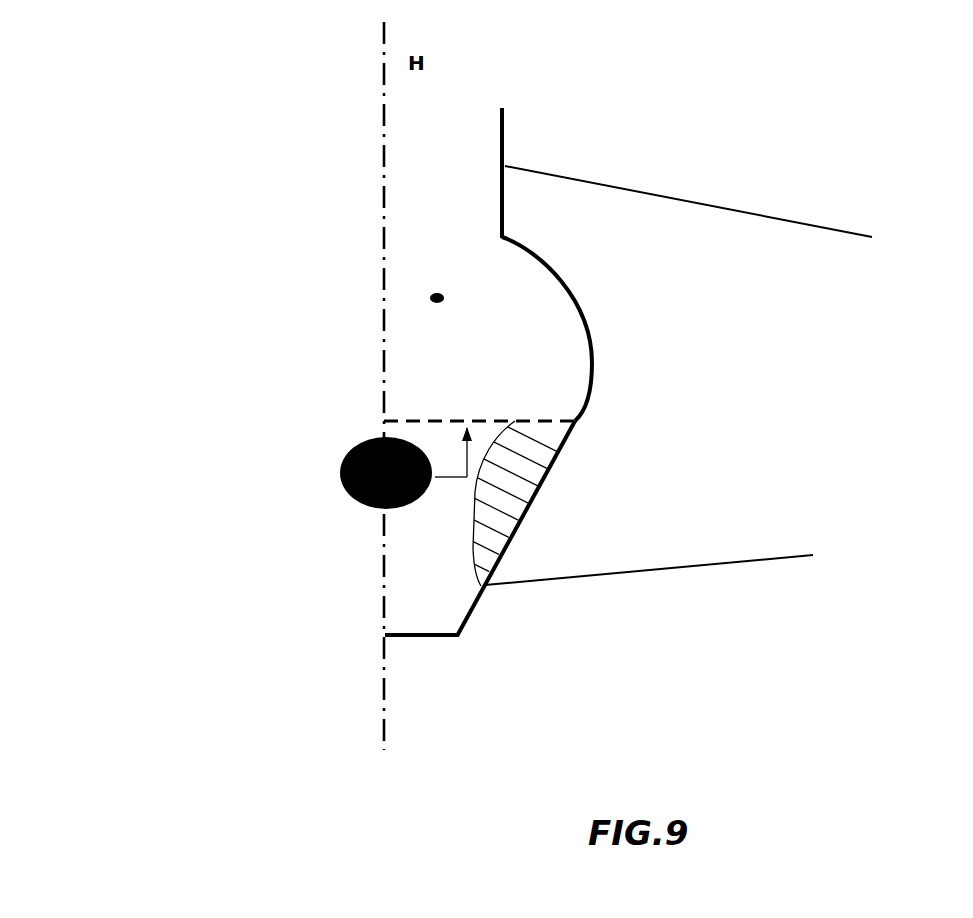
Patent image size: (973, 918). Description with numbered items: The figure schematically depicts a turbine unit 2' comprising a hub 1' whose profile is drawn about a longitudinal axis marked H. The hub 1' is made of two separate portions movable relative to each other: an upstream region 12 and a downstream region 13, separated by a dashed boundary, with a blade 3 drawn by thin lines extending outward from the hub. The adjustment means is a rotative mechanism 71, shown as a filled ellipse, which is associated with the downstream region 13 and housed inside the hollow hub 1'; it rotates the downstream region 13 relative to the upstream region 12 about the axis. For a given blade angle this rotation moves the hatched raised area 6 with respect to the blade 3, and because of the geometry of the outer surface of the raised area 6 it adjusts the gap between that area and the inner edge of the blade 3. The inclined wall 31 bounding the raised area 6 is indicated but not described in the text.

The hub 1' is at (319, 386).
The turbine unit 2' is at (722, 135).
The blade 3 is at (717, 375).
The raised area 6 is at (514, 485).
The upstream region 12 is at (488, 329).
The downstream region 13 is at (426, 531).
The inclined wall 31 is at (528, 525).
The rotative mechanism 71 is at (341, 480).